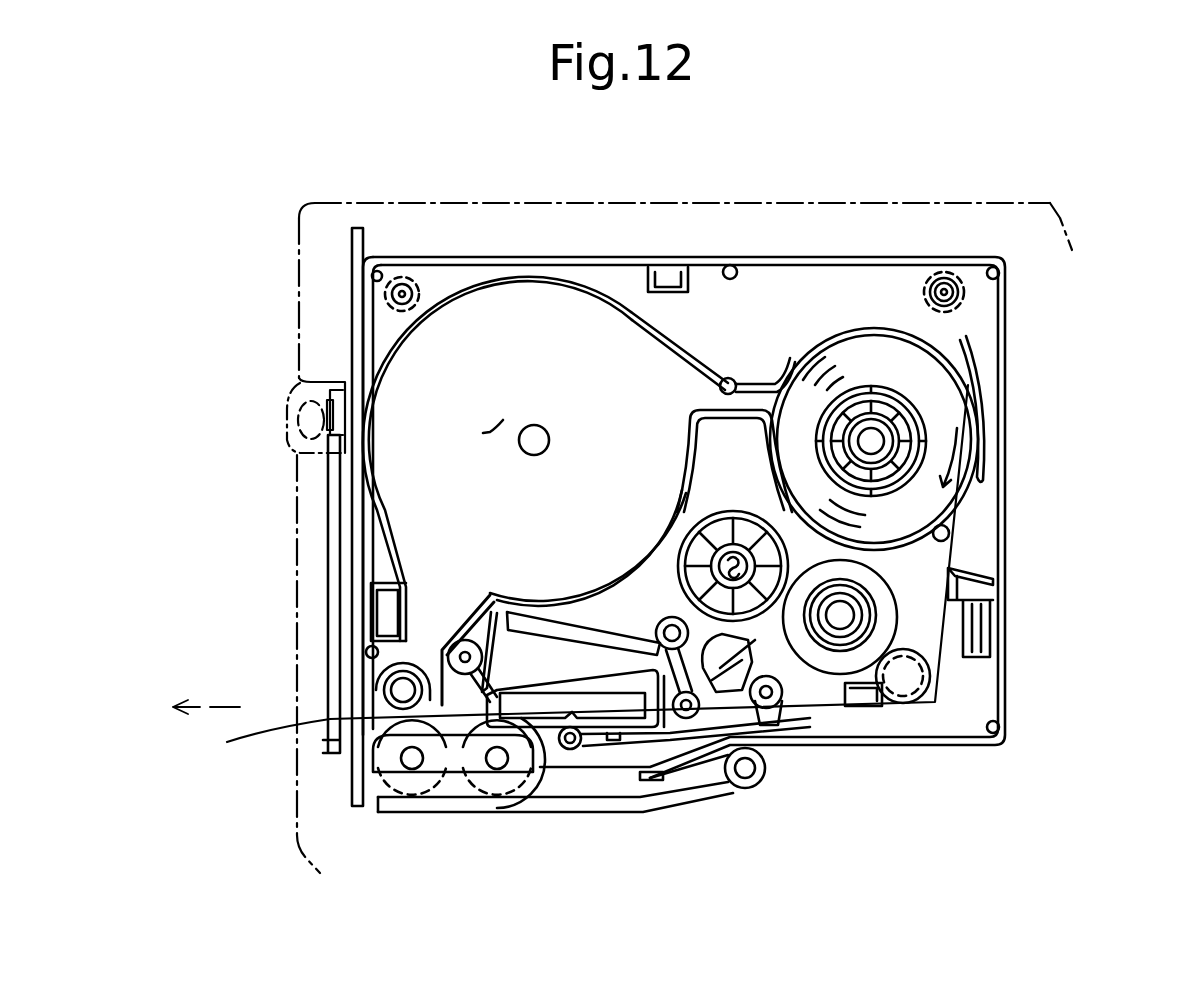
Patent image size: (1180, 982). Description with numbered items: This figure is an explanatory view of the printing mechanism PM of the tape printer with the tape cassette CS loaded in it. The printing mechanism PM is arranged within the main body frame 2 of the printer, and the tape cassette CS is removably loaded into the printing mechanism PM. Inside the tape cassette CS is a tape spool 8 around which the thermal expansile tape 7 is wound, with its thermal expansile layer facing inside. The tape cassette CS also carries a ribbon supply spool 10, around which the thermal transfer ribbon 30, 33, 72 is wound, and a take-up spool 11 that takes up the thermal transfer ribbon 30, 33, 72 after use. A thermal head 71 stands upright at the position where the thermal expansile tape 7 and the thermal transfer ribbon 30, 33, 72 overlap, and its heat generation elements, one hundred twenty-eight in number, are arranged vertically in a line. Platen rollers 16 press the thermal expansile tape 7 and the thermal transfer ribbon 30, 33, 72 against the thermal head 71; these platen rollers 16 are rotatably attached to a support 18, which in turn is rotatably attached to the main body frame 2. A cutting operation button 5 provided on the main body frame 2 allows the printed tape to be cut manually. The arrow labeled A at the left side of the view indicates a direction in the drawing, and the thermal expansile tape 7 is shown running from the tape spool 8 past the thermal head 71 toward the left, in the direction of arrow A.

The main body frame 2 is at (295, 305).
The cutting operation button 5 is at (290, 404).
The thermal expansile tape 7 is at (865, 590).
The tape spool 8 is at (913, 410).
The ribbon supply spool 10 is at (885, 620).
The take-up spool 11 is at (737, 510).
The platen rollers 16 is at (477, 783).
The support 18 is at (643, 812).
The thermal transfer ribbon 30 is at (1043, 612).
The thermal transfer ribbon 33 is at (1043, 612).
The thermal head 71 is at (543, 783).
The thermal transfer ribbon 72 is at (935, 642).
The tape cassette CS is at (1022, 466).
The printing mechanism PM is at (829, 790).
The direction A is at (216, 705).